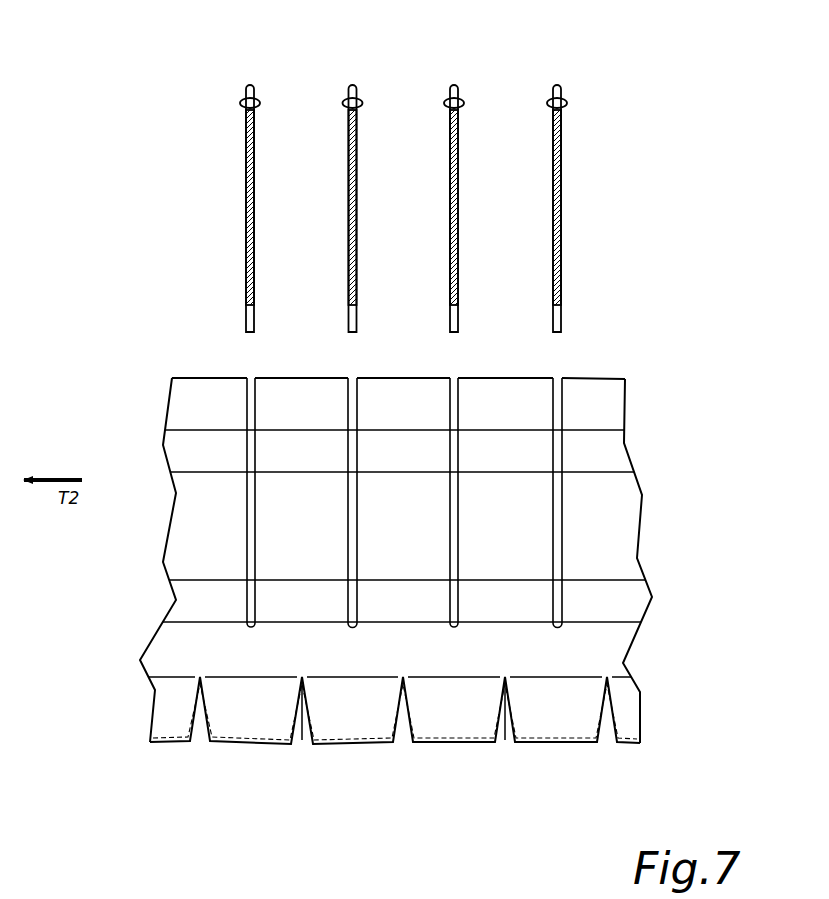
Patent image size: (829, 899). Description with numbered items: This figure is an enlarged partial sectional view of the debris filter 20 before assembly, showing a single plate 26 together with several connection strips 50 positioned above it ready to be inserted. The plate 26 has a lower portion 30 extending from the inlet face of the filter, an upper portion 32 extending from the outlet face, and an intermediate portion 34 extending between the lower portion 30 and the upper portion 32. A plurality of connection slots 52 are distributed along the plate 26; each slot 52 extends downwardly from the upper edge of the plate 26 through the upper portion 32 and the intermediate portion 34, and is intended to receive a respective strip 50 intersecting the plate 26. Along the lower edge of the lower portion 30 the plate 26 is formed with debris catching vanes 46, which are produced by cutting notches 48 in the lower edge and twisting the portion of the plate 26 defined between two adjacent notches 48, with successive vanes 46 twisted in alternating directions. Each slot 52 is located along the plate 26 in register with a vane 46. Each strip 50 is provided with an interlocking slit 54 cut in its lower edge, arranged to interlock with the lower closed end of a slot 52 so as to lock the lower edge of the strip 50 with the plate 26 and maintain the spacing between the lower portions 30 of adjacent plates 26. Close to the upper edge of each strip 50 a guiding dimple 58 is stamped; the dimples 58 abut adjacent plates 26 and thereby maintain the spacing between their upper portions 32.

The debris filter 20 is at (176, 197).
The plate 26 is at (622, 520).
The lower portion 30 is at (175, 647).
The upper portion 32 is at (190, 393).
The intermediate portion 34 is at (183, 533).
The debris catching vane 46 is at (332, 725).
The notch 48 is at (301, 748).
The connection strip 50 is at (347, 137).
The connection slot 52 is at (350, 476).
The interlocking slit 54 is at (345, 320).
The guiding dimple 58 is at (259, 110).